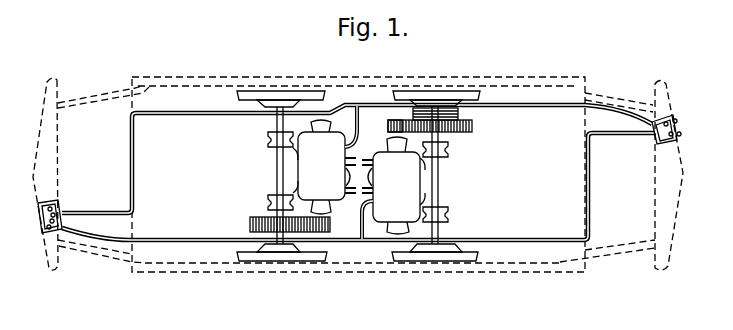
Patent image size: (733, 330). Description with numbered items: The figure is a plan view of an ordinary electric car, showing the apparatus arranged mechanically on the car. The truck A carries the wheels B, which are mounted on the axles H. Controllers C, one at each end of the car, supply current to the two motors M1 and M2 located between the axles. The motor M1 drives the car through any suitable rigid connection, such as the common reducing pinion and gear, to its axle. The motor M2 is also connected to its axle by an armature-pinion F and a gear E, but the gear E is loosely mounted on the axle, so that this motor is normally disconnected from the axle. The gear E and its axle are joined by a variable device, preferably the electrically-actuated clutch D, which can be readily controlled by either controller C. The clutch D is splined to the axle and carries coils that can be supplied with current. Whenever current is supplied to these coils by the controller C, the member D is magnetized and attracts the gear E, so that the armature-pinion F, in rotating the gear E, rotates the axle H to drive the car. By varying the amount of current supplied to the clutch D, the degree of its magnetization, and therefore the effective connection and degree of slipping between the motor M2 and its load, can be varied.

The truck A is at (585, 162).
The wheels B is at (435, 96).
The controllers C is at (42, 209).
The electrically-actuated clutch D is at (460, 117).
The gear E is at (470, 133).
The armature-pinion F is at (389, 123).
The axles H is at (277, 168).
The motor M1 is at (324, 167).
The motor M2 is at (393, 185).